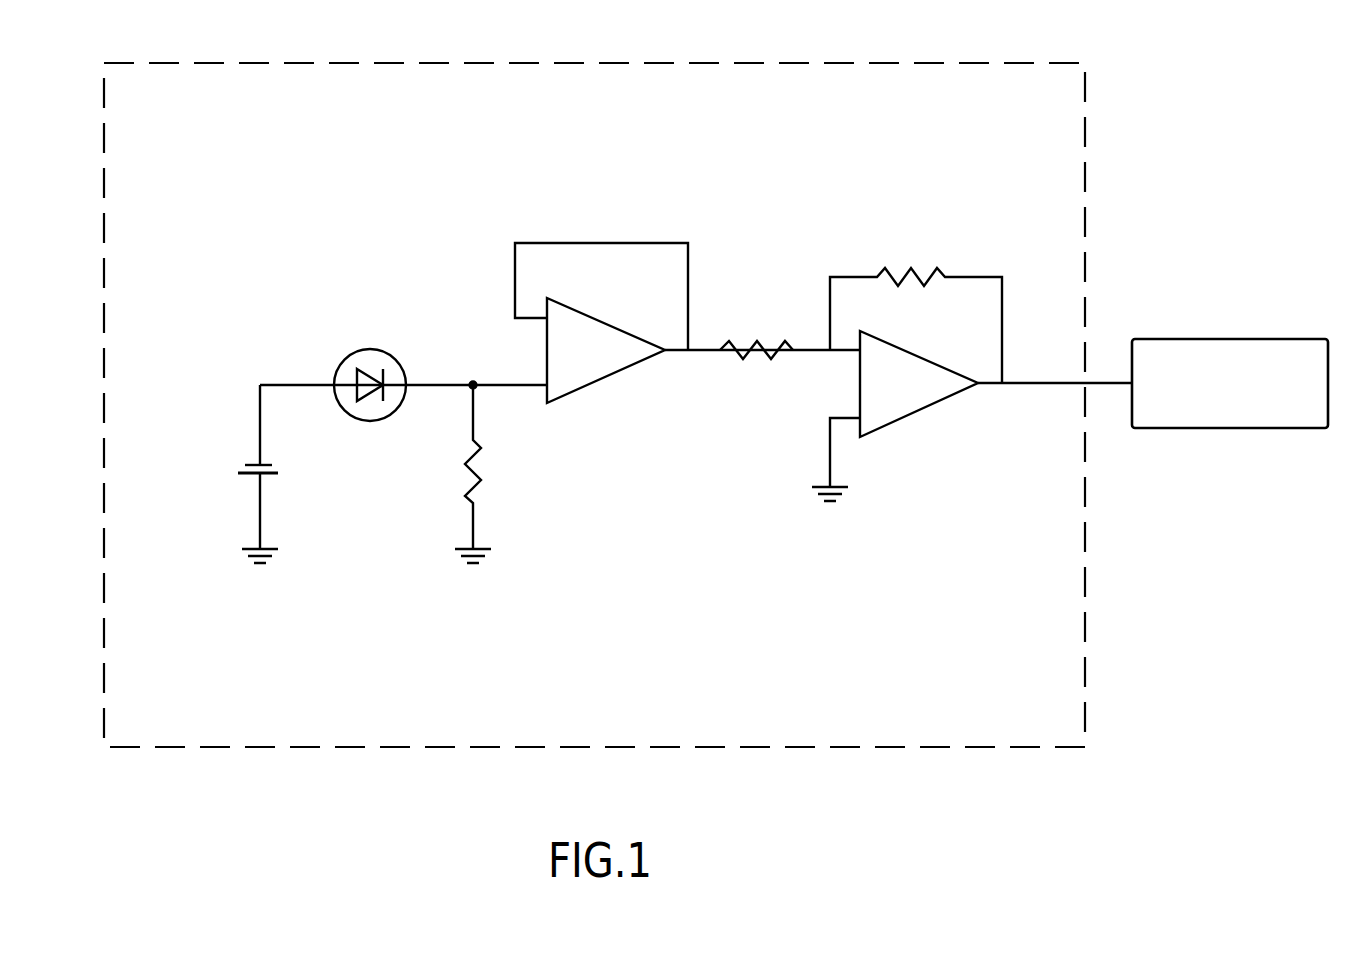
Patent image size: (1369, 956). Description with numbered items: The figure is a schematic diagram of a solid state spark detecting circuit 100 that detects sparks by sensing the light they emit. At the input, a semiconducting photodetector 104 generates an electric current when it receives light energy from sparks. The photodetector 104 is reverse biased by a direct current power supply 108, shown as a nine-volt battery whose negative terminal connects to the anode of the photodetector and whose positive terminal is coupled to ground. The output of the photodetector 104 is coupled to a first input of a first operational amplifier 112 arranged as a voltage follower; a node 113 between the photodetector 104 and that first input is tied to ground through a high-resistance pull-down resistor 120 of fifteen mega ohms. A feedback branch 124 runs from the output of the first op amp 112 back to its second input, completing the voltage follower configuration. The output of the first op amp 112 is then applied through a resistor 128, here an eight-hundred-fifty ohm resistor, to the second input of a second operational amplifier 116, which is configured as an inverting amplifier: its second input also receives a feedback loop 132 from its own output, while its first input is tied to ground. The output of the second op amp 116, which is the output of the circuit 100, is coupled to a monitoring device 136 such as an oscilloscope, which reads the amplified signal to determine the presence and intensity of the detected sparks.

The solid state spark detecting circuit 100 is at (1086, 160).
The semiconducting photodetector 104 is at (343, 365).
The direct current power supply 108 is at (250, 478).
The first operational amplifier 112 is at (597, 381).
The node 113 is at (473, 381).
The second operational amplifier 116 is at (905, 418).
The pull-down resistor 120 is at (478, 487).
The feedback branch 124 is at (557, 243).
The resistor 128 is at (755, 345).
The feedback loop 132 is at (946, 273).
The monitoring device 136 is at (1212, 338).